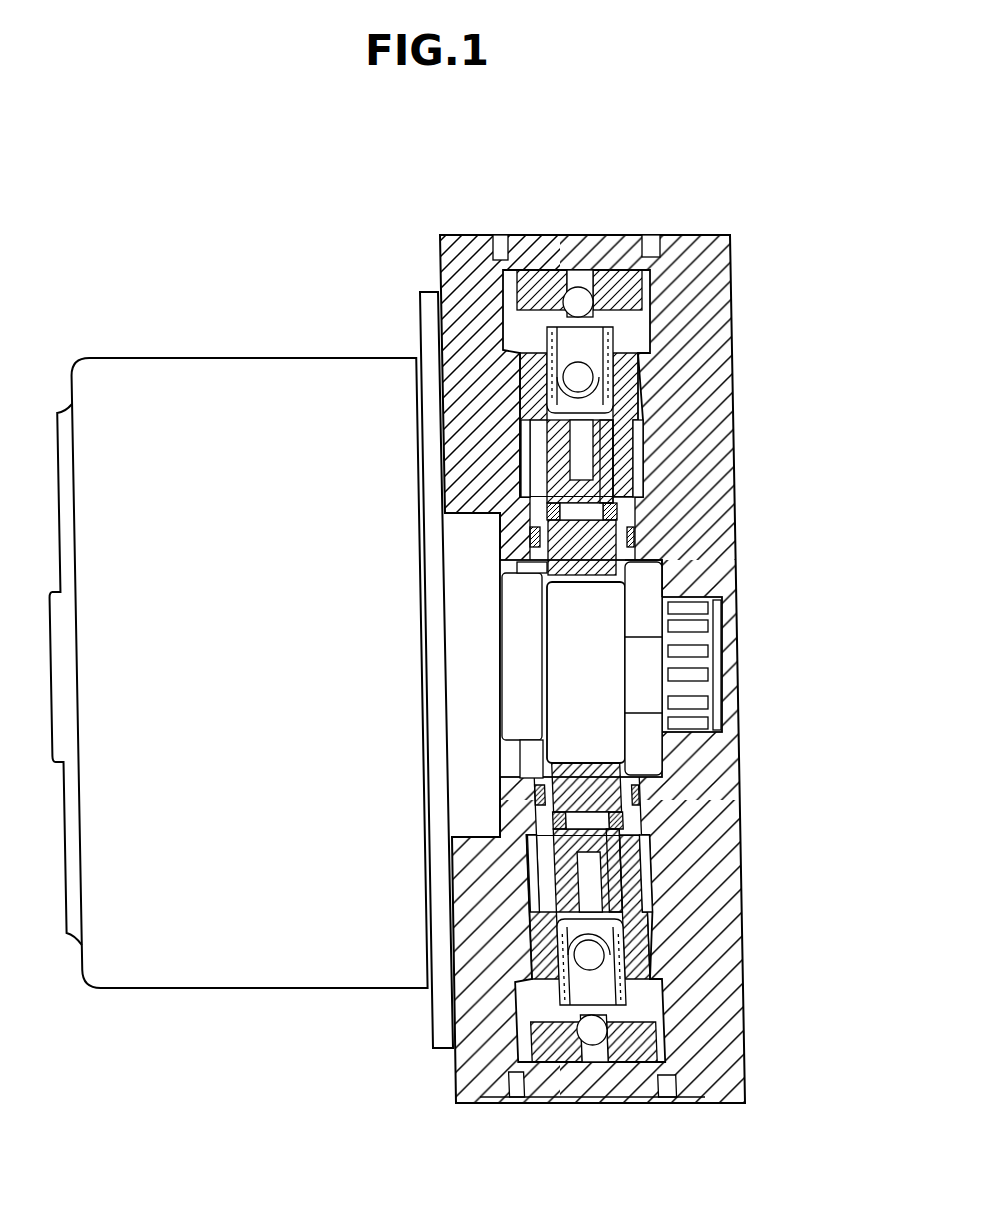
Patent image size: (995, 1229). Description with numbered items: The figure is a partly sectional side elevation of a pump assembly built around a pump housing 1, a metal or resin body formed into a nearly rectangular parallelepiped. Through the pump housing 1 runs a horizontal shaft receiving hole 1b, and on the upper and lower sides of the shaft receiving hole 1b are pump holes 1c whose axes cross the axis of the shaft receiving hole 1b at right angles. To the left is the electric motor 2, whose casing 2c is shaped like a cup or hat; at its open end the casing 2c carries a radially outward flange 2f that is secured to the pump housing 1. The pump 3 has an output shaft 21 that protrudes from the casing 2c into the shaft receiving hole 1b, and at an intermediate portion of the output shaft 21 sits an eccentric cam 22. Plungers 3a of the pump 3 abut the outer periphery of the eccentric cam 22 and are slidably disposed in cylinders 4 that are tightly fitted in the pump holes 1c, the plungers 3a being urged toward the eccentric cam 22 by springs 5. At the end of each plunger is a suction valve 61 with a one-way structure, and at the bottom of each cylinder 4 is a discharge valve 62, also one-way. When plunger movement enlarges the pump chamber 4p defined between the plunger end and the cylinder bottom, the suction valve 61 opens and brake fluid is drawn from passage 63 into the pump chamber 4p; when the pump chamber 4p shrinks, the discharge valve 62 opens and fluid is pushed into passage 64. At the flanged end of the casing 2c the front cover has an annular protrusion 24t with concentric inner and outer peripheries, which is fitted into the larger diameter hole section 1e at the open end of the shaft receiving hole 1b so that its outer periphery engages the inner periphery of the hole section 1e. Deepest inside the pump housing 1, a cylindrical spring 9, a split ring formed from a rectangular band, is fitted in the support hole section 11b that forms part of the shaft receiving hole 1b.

The pump housing 1 is at (738, 267).
The shaft receiving hole 1b is at (653, 565).
The pump holes 1c is at (640, 370).
The larger diameter hole section 1e is at (515, 526).
The electric motor 2 is at (246, 350).
The casing 2c is at (150, 388).
The radially outward flange 2f is at (423, 325).
The pump 3 is at (558, 547).
The plungers 3a is at (565, 572).
The cylinders 4 is at (627, 395).
The pump chamber 4p is at (617, 342).
The springs 5 is at (530, 363).
The cylindrical spring 9 is at (700, 637).
The support hole section 11b is at (690, 690).
The output shaft 21 is at (650, 722).
The eccentric cam 22 is at (562, 630).
The annular protrusion 24t is at (495, 782).
The suction valve 61 is at (550, 437).
The discharge valve 62 is at (608, 288).
The passage 63 is at (610, 468).
The passage 64 is at (573, 285).